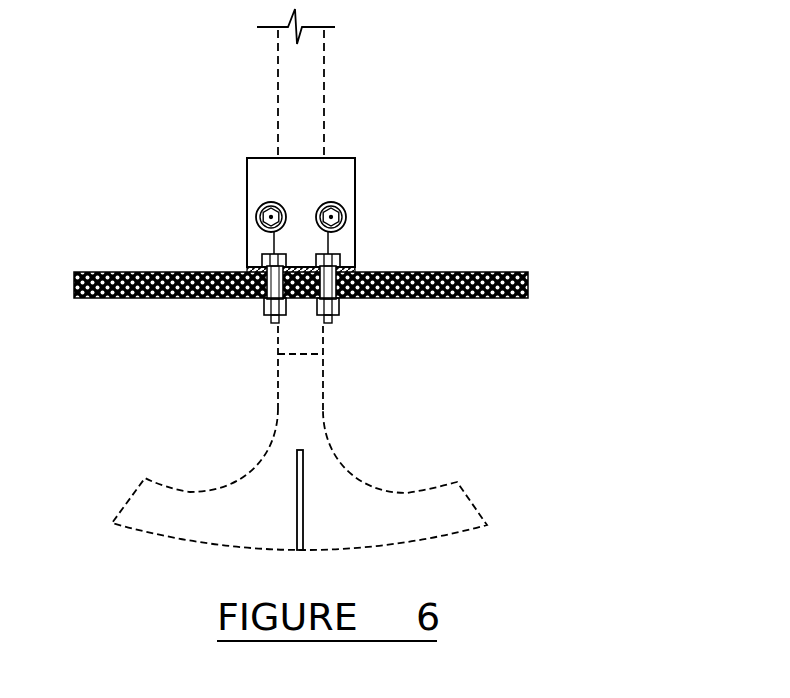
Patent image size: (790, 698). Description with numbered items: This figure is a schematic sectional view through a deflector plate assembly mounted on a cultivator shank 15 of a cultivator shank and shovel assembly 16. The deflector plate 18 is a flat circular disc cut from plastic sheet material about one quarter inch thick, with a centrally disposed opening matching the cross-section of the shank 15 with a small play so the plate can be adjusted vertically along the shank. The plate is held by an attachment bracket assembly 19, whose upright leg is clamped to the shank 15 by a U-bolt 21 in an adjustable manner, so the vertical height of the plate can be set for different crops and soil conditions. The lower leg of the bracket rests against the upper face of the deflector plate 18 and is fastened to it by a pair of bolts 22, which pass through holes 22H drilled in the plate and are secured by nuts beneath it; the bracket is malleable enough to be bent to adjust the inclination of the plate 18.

The cultivator shank 15 is at (324, 53).
The cultivator shank and shovel assembly 16 is at (467, 490).
The deflector plate 18 is at (477, 273).
The attachment bracket assembly 19 is at (358, 242).
The U-bolt 21 is at (350, 207).
The bolts 22 is at (345, 318).
The holes 22H is at (262, 299).